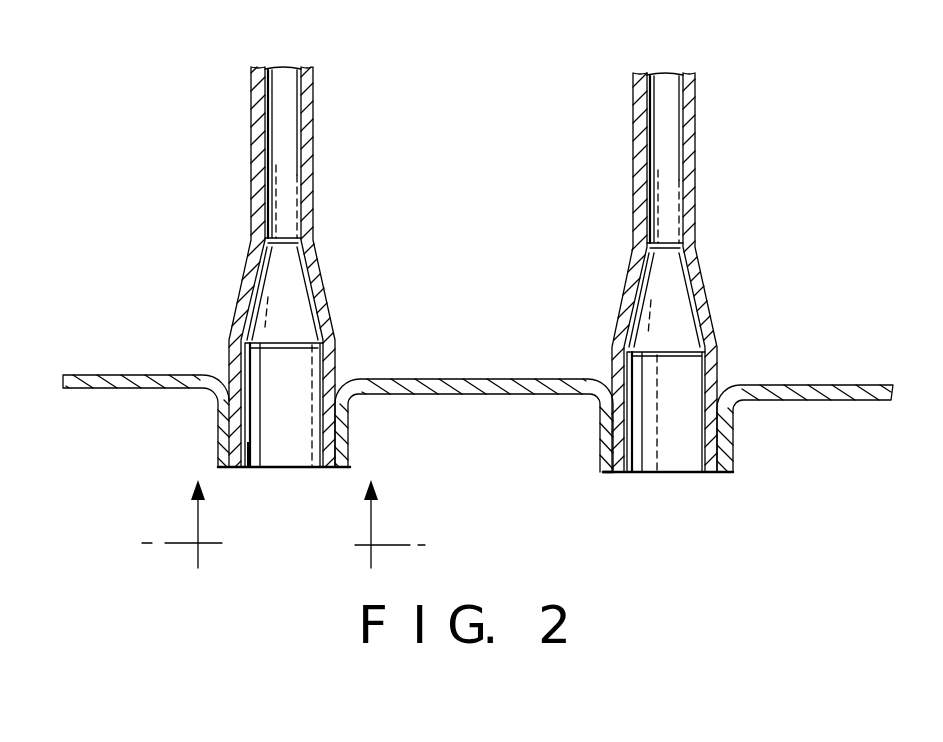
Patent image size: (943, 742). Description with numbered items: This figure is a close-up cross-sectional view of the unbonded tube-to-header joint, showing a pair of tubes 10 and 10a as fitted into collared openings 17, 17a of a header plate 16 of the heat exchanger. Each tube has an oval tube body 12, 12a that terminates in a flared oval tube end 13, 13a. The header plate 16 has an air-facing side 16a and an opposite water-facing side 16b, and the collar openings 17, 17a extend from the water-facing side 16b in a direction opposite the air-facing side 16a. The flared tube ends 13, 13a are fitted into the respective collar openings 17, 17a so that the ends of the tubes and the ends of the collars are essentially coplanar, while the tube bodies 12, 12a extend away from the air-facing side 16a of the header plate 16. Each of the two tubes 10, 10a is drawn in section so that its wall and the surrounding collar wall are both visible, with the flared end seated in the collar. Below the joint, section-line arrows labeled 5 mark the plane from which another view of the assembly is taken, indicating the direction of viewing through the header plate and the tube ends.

The tube 10 is at (265, 270).
The tube 10a is at (672, 279).
The oval tube body 12 is at (315, 91).
The oval tube body 12a is at (693, 111).
The flared oval tube end 13 is at (250, 468).
The flared oval tube end 13a is at (700, 473).
The header plate 16 is at (138, 375).
The air-facing side 16a is at (474, 391).
The water-facing side 16b is at (433, 395).
The collared opening 17 is at (222, 456).
The collared opening 17a is at (604, 473).
The section line 5- 5 is at (283, 524).